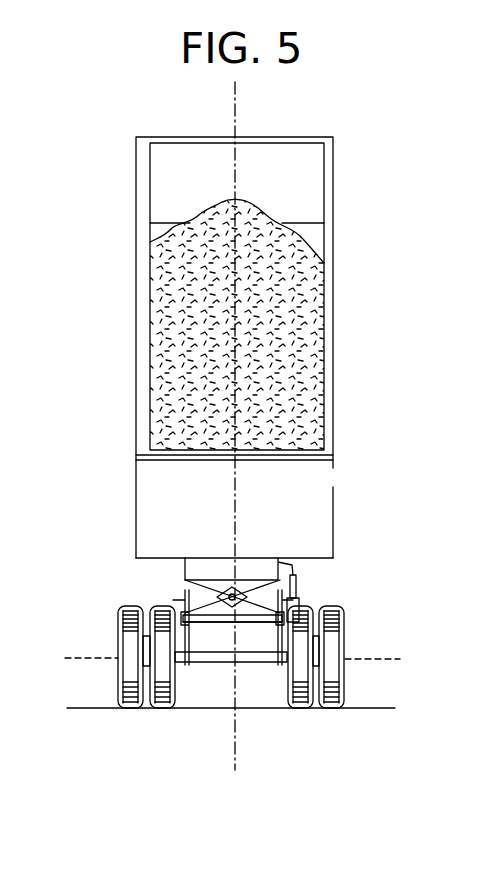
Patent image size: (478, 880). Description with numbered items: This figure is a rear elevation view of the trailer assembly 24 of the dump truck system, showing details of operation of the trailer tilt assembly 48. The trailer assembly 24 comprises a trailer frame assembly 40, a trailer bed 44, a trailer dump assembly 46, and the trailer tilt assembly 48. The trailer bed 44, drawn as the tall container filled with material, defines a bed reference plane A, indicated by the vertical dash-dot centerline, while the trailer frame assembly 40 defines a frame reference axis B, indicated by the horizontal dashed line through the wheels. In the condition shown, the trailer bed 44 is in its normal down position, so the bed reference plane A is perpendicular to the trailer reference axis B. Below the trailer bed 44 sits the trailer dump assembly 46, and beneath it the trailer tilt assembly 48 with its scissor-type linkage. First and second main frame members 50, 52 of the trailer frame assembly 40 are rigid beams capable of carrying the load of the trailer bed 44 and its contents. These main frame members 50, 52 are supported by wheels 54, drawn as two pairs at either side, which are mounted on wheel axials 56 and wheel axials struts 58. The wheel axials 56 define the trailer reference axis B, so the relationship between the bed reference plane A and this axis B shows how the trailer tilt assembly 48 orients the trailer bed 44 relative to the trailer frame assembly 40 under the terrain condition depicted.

The trailer assembly 24 is at (360, 469).
The trailer bed 44 is at (338, 172).
The trailer dump assembly 46 is at (336, 572).
The trailer tilt assembly 48 is at (126, 568).
The first main frame member 50 is at (185, 590).
The second main frame member 52 is at (286, 598).
The wheels 54 is at (158, 654).
The wheel axials 56 is at (200, 660).
The wheel axials struts 58 is at (190, 638).
The trailer frame assembly 40 is at (93, 690).
The bed reference plane A is at (238, 123).
The trailer reference axis B is at (83, 660).